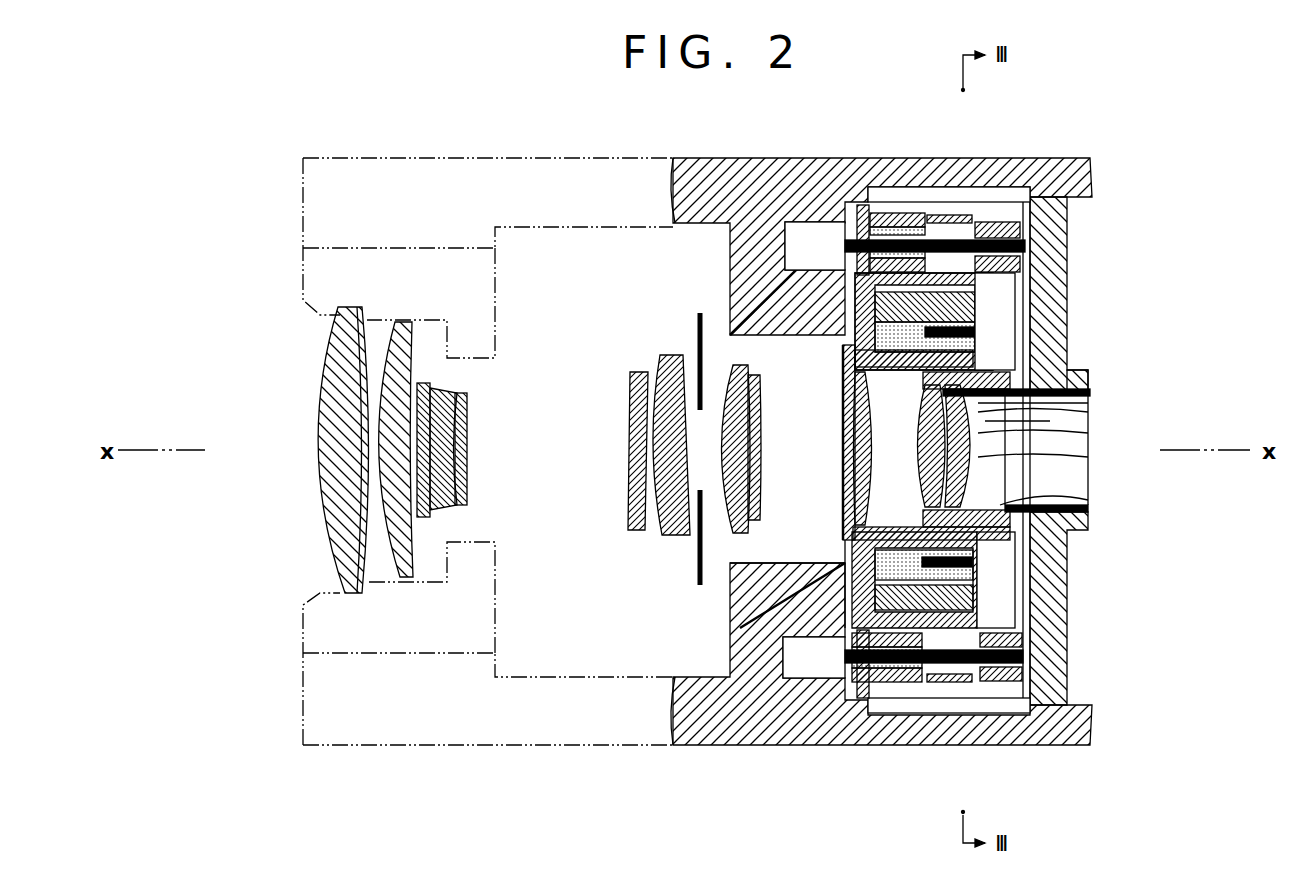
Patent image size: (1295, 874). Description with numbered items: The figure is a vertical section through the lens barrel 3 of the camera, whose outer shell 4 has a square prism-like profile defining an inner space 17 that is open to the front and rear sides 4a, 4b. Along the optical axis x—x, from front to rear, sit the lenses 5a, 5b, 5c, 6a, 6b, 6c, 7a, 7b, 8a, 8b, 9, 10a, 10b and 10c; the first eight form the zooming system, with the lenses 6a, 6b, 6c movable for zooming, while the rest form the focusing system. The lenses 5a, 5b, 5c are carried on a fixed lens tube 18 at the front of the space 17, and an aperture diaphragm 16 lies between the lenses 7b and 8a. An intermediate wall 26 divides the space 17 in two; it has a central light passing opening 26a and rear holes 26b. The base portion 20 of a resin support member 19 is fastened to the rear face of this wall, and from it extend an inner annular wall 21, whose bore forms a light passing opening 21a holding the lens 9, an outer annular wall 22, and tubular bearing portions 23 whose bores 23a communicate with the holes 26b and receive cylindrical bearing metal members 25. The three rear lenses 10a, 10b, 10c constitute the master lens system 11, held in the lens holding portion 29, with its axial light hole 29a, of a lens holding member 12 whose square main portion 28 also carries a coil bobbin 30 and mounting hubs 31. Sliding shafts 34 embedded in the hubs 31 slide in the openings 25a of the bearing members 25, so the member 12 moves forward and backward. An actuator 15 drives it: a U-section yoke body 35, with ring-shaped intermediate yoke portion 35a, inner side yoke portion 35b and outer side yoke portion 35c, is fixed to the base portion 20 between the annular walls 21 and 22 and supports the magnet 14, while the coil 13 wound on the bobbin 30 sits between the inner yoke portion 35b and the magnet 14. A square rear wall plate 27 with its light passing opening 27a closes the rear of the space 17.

The lens barrel 3 is at (366, 148).
The outer shell 4 is at (694, 158).
The front side 4a is at (303, 712).
The rear side 4b is at (1112, 715).
The lens 5a is at (343, 596).
The lens 5b is at (375, 590).
The lens 5c is at (412, 583).
The lens 6a is at (424, 383).
The lens 6b is at (452, 390).
The lens 6c is at (466, 410).
The lens 7a is at (632, 375).
The lens 7b is at (665, 355).
The lens 8a is at (728, 530).
The lens 8b is at (748, 528).
The lens 9 is at (853, 476).
The lens 10a is at (1075, 410).
The lens 10b is at (1075, 434).
The lens 10c is at (1075, 459).
The master lens system 11 is at (1138, 398).
The lens holding member 12 is at (1128, 275).
The coil 13 is at (862, 313).
The magnet 14 is at (848, 300).
The actuator 15 is at (683, 243).
The aperture diaphragm 16 is at (698, 333).
The space 17 is at (558, 280).
The fixed lens tube 18 is at (496, 583).
The support member 19 is at (865, 195).
The base portion 20 is at (845, 600).
The inner side annular wall 21 is at (885, 370).
The light passing opening 21a is at (870, 373).
The outer side annular wall 22 is at (1030, 280).
The bearing portion 23 is at (905, 213).
The opening 23a is at (928, 215).
The bearing metal member 25 is at (925, 233).
The opening 25a is at (885, 213).
The intermediate wall 26 is at (735, 598).
The light passing opening 26a is at (845, 607).
The hole 26b is at (790, 222).
The rear wall plate 27 is at (1067, 215).
The light passing opening 27a is at (1068, 380).
The main portion 28 is at (1024, 280).
The lens holding portion 29 is at (918, 520).
The axial opening 29a is at (1088, 510).
The coil bobbin 30 is at (1018, 285).
The mounting hub 31 is at (1000, 222).
The sliding shaft 34 is at (968, 245).
The yoke body 35 is at (848, 288).
The intermediate yoke portion 35a is at (800, 338).
The inner side yoke portion 35b is at (1010, 548).
The outer side yoke portion 35c is at (1000, 613).